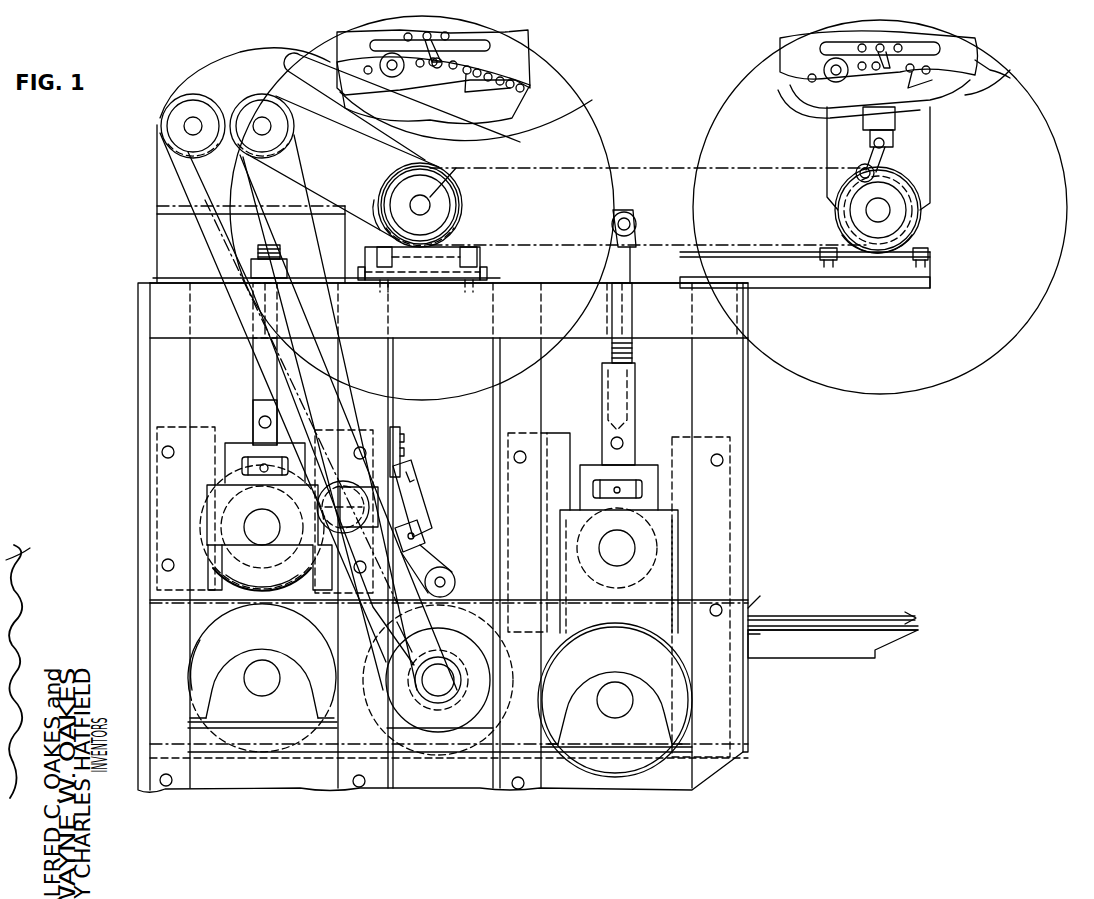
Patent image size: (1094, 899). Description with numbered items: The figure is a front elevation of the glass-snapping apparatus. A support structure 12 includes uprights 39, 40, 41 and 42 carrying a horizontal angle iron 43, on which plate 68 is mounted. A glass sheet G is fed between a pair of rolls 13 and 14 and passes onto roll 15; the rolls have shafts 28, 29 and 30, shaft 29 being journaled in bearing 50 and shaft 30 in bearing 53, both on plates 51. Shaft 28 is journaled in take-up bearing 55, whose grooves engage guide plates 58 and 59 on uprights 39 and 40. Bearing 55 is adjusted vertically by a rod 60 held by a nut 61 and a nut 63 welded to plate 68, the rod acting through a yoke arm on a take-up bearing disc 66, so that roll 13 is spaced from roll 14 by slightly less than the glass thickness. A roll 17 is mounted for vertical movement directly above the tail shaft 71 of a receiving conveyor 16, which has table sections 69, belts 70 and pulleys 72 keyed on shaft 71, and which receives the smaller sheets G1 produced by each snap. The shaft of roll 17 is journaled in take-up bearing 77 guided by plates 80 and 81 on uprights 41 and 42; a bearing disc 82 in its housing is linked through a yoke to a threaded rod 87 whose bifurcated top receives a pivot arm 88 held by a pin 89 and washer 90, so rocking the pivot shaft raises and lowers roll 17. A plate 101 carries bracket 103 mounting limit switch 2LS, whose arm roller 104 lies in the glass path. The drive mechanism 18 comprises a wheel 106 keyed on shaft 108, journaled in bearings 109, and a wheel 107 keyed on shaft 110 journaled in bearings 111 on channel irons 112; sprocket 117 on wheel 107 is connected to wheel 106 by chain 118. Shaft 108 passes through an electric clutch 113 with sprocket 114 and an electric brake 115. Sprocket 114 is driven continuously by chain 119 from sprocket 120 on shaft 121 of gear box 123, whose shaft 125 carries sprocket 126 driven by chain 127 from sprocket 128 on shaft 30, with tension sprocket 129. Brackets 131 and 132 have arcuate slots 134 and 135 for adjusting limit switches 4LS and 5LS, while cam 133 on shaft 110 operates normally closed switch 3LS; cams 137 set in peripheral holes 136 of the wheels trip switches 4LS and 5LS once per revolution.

The support structure 12 is at (136, 298).
The roll 13 is at (232, 586).
The roll 14 is at (198, 664).
The roll 15 is at (458, 602).
The receiving conveyor 16 is at (926, 626).
The roll 17 is at (590, 508).
The mechanism 18 is at (1042, 90).
The shaft 28 is at (262, 527).
The shaft 29 is at (262, 678).
The shaft 30 is at (438, 680).
The upright 39 is at (169, 485).
The upright 40 is at (361, 360).
The upright 41 is at (521, 386).
The upright 42 is at (717, 380).
The horizontal angle iron 43 is at (449, 306).
The bearing 50 is at (262, 709).
The plates 51 is at (321, 740).
The bearing 53 is at (438, 680).
The take-up bearing 55 is at (222, 497).
The guide plate 58 is at (196, 470).
The guide plate 59 is at (304, 446).
The rod 60 is at (278, 368).
The nut 61 is at (258, 256).
The nut 63 is at (278, 302).
The take-up bearing disc 66 is at (250, 456).
The plate 68 is at (182, 278).
The table sections 69 is at (806, 660).
The belts 70 is at (762, 636).
The tail shaft 71 is at (615, 708).
The pulleys 72 is at (615, 700).
The take-up bearing 77 is at (636, 462).
The guide plate 80 is at (548, 433).
The guide plate 81 is at (676, 437).
The bearing disc 82 is at (645, 490).
The rod 87 is at (634, 352).
The pivot arm 88 is at (624, 206).
The pin 89 is at (637, 220).
The washer 90 is at (637, 230).
The plate 101 is at (400, 428).
The bracket 103 is at (408, 472).
The roller 104 is at (440, 572).
The wheel 106 is at (582, 92).
The wheel 107 is at (1015, 70).
The shaft 108 is at (384, 212).
The bearing 109 is at (428, 272).
The shaft 110 is at (882, 210).
The bearing 111 is at (928, 248).
The channel iron 112 is at (872, 278).
The electric clutch 113 is at (438, 198).
The sprocket 114 is at (456, 226).
The electric brake 115 is at (452, 178).
The sprocket 117 is at (840, 217).
The chain 118 is at (661, 165).
The chain 119 is at (412, 160).
The sprocket 120 is at (286, 142).
The shaft 121 is at (272, 128).
The gear box 123 is at (198, 74).
The shaft 125 is at (186, 126).
The sprocket 126 is at (200, 152).
The chain 127 is at (254, 355).
The sprocket 128 is at (428, 660).
The sprocket 129 is at (328, 440).
The bracket 131 is at (352, 72).
The bracket 132 is at (792, 82).
The cam 133 is at (862, 228).
The arcuate slot 134 is at (358, 60).
The arcuate slot 135 is at (780, 48).
The holes 136 is at (661, 84).
The dogs or cams 137 is at (400, 78).
The limit switch 2LS is at (414, 520).
The limit switch 3LS is at (896, 130).
The limit switch 4LS is at (447, 51).
The limit switch 5LS is at (999, 60).
The glass sheet G is at (197, 602).
The smaller glass sheets G1 is at (763, 589).